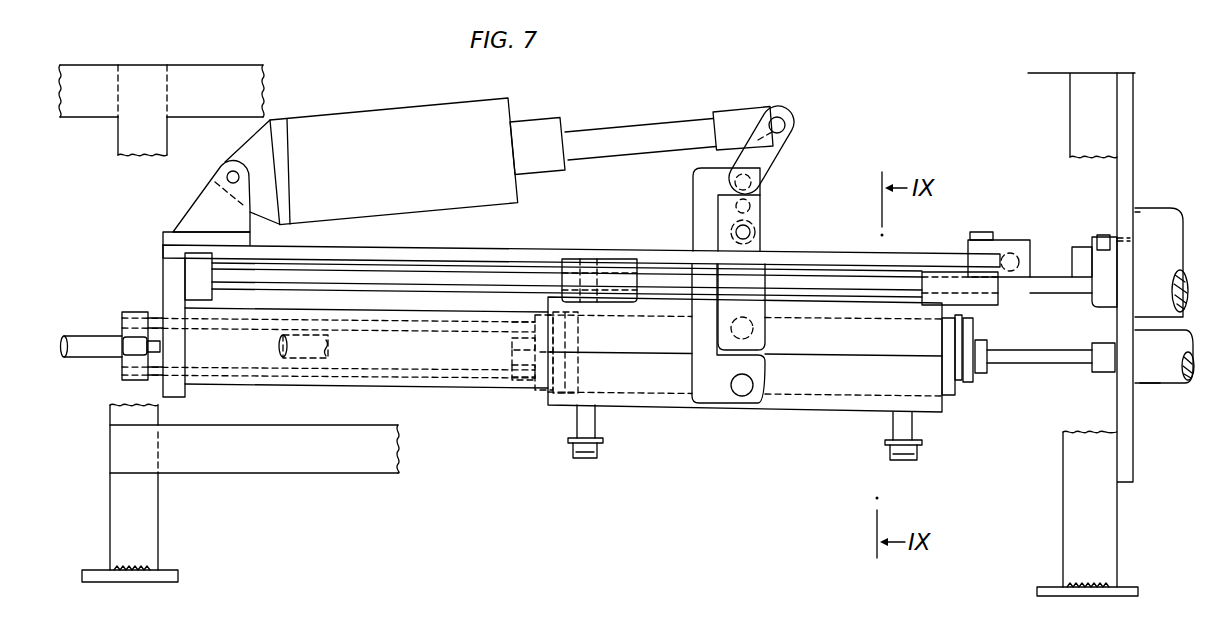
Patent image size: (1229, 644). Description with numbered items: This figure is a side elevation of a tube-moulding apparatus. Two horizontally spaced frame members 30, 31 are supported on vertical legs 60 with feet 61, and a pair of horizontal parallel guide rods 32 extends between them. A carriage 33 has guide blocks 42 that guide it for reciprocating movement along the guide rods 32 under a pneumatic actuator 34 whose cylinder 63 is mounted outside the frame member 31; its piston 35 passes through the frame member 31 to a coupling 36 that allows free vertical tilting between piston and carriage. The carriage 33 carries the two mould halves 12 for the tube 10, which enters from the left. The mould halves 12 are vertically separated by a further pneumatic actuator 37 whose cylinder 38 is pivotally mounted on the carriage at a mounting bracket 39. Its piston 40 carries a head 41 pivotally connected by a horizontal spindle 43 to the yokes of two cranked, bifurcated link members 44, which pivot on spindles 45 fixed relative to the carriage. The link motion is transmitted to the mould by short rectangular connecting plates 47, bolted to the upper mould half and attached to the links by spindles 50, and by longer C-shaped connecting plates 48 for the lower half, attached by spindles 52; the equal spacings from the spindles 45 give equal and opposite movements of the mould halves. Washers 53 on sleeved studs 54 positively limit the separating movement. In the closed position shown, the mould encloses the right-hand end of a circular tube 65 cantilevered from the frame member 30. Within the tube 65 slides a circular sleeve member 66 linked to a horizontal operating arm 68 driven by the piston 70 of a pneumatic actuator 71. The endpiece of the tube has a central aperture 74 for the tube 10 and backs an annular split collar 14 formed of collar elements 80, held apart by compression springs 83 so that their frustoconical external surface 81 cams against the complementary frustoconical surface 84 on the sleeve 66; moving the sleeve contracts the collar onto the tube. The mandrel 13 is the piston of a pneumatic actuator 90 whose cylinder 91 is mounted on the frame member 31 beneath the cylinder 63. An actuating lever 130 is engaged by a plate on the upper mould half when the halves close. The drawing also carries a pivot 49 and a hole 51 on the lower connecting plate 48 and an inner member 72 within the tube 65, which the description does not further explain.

The tube 10 is at (82, 346).
The mould halves 12 is at (872, 346).
The mandrel 13 is at (1052, 351).
The annular split collar 14 is at (520, 325).
The frame member 30 is at (172, 312).
The frame member 31 is at (1127, 443).
The guide rods 32 is at (1070, 288).
The carriage 33 is at (505, 250).
The pneumatic actuator 34 is at (1150, 204).
The piston 35 is at (1083, 250).
The coupling 36 is at (1018, 236).
The pneumatic actuator 37 is at (437, 103).
The cylinder 38 is at (407, 170).
The mounting bracket 39 is at (195, 212).
The piston 40 is at (636, 128).
The head 41 is at (733, 112).
The guide blocks 42 is at (617, 263).
The horizontal spindle 43 is at (803, 122).
The bifurcated link members 44 is at (783, 158).
The spindles 45 is at (752, 206).
The connecting plates 47 is at (753, 280).
The connecting plates 48 is at (712, 393).
The pivot pin 49 is at (755, 330).
The spindles 50 is at (755, 236).
The hole 51 is at (747, 387).
The spindles 52 is at (755, 185).
The washers 53 is at (568, 440).
The sleeved studs 54 is at (577, 422).
The vertical legs 60 is at (142, 510).
The feet 61 is at (180, 570).
The cylinder 63 is at (1160, 223).
The circular tube 65 is at (350, 383).
The circular sleeve member 66 is at (160, 318).
The horizontal operating arm 68 is at (122, 320).
The piston 70 is at (162, 345).
The pneumatic actuator 71 is at (205, 374).
The inner tube 72 is at (248, 355).
The central aperture 74 is at (580, 360).
The collar elements 80 is at (512, 380).
The frustoconical external surface 81 is at (515, 380).
The compression springs 83 is at (578, 328).
The frustoconical surface 84 is at (598, 372).
The pneumatic actuator 90 is at (1149, 390).
The cylinder 91 is at (1170, 372).
The actuating lever 130 is at (973, 380).